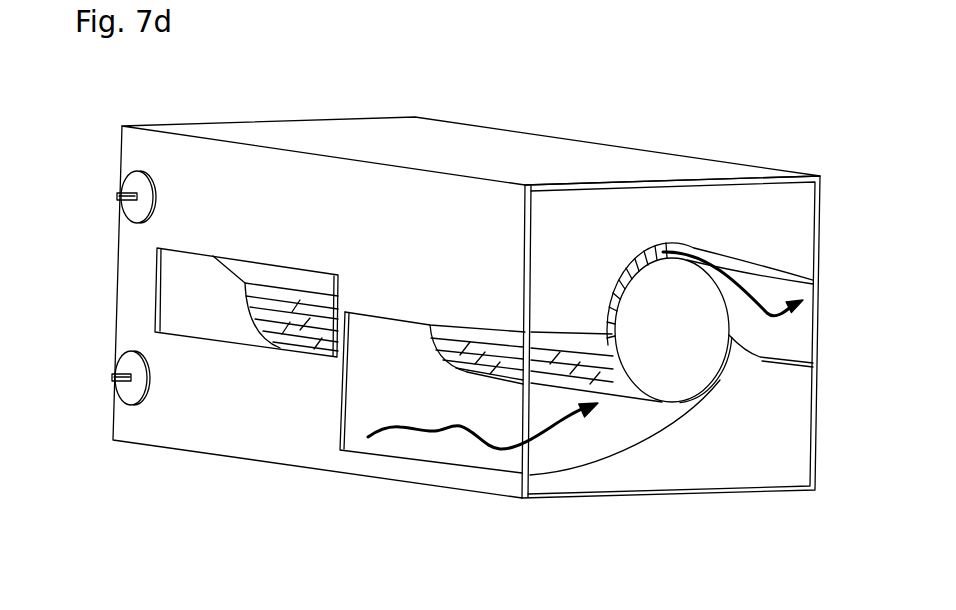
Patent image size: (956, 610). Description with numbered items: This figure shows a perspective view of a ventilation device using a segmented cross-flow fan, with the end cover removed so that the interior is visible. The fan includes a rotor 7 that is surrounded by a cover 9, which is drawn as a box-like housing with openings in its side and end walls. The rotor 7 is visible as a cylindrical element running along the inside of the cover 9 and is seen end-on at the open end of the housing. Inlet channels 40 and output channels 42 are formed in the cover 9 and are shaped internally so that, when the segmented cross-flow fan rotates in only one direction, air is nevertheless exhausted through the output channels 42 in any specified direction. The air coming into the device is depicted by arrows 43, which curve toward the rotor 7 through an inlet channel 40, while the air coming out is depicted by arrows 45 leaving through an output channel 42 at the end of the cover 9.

The cover 9 is at (556, 160).
The output channels 42 is at (210, 338).
The inlet channels 40 is at (432, 443).
The rotor 7 is at (662, 402).
The arrows depicting incoming air 43 is at (497, 450).
The arrows depicting outgoing air 45 is at (770, 318).